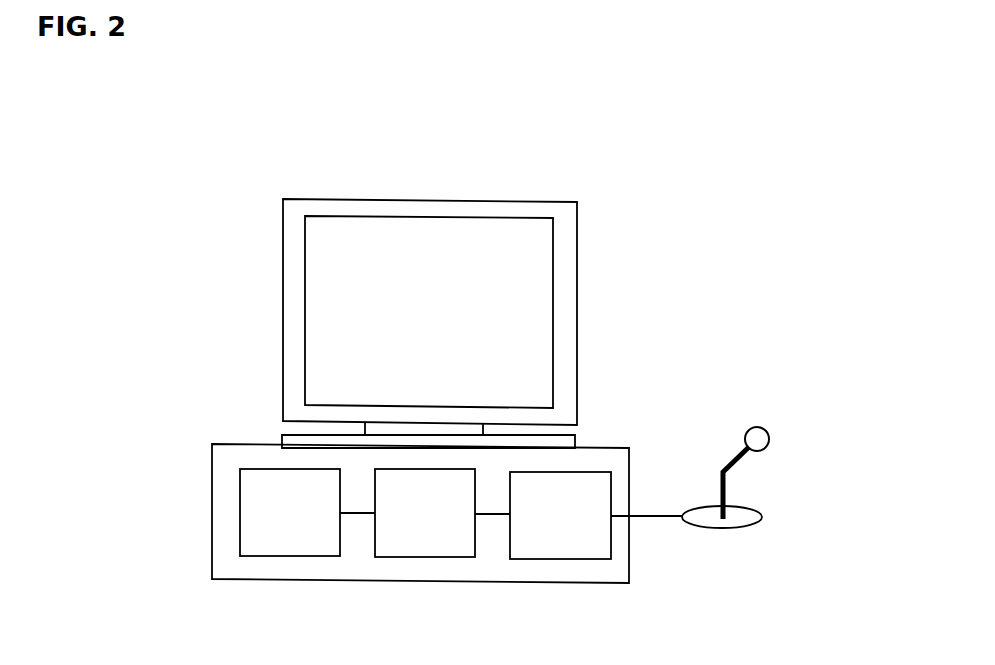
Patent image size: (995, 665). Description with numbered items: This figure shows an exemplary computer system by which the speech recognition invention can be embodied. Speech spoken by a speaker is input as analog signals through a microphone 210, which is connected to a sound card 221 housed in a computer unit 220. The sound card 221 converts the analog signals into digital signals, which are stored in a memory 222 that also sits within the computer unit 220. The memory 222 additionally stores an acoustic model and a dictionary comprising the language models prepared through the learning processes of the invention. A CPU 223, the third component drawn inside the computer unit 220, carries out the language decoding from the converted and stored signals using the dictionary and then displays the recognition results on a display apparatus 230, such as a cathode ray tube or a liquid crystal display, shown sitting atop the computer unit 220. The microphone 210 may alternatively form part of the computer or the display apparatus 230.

The display apparatus 230 is at (238, 330).
The computer unit 220 is at (198, 506).
The CPU 223 is at (307, 512).
The memory 222 is at (442, 513).
The sound card 221 is at (596, 515).
The microphone 210 is at (735, 408).